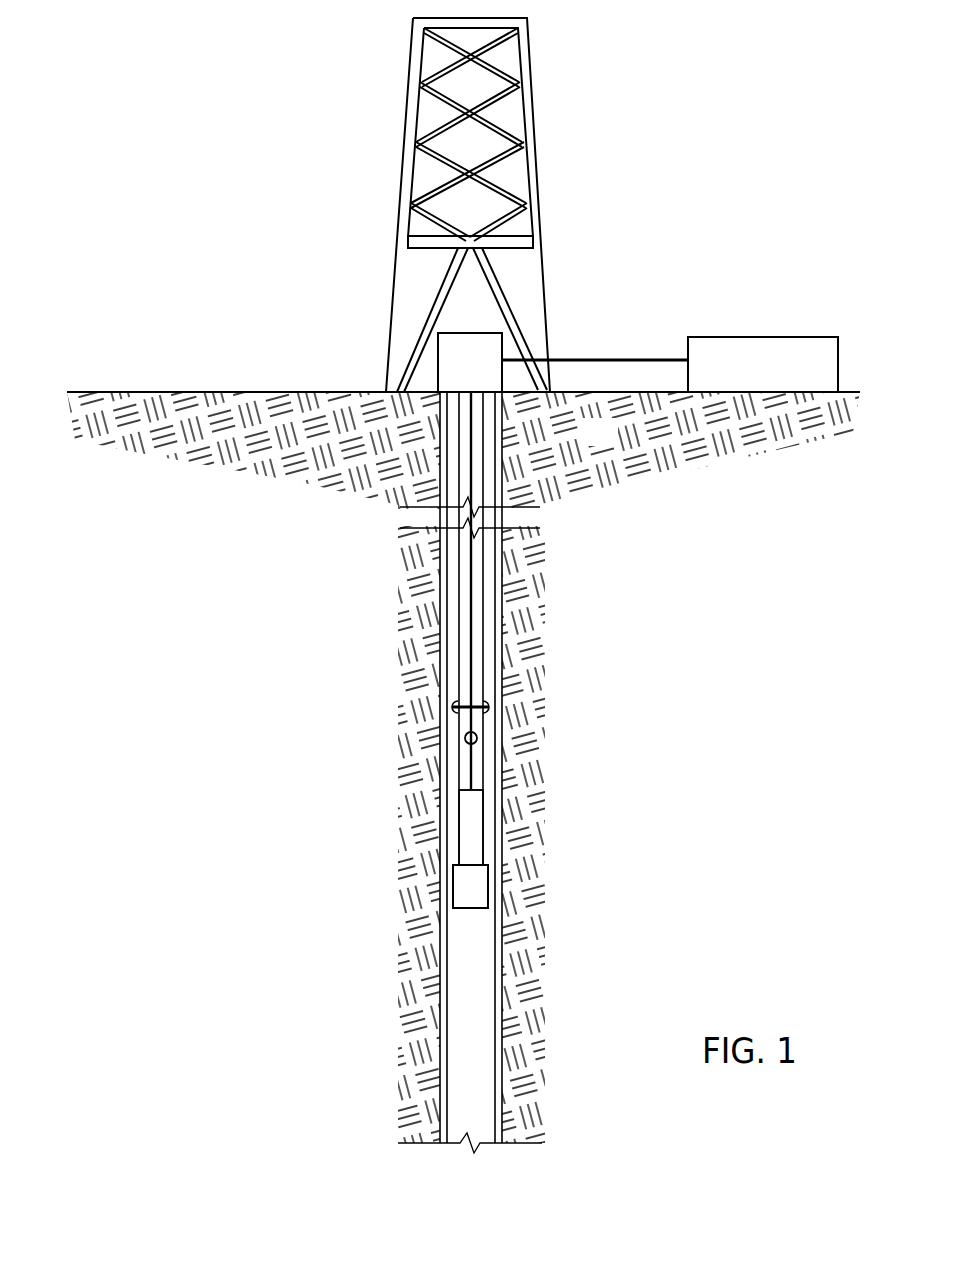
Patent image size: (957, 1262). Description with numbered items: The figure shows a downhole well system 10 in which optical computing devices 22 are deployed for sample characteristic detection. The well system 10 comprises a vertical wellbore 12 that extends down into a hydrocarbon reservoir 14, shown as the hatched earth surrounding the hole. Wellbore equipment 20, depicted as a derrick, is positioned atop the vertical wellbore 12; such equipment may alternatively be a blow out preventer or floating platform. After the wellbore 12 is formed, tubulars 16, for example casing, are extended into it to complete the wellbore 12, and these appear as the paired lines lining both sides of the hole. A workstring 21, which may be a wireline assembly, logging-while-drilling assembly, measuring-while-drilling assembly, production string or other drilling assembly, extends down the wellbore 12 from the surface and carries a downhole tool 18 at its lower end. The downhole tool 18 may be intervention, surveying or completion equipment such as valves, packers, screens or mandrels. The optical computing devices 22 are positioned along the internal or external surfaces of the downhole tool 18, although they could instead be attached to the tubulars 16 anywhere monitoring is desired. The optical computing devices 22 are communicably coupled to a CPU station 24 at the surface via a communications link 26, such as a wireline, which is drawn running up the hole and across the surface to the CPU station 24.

The downhole well system 10 is at (254, 190).
The vertical wellbore 12 is at (485, 968).
The hydrocarbon reservoir 14 is at (615, 443).
The tubulars 16 is at (504, 582).
The downhole tool 18 is at (468, 763).
The wellbore equipment 20 is at (538, 173).
The workstring 21 is at (488, 660).
The optical computing devices 22 is at (450, 708).
The CPU station 24 is at (775, 337).
The communications link 26 is at (611, 360).